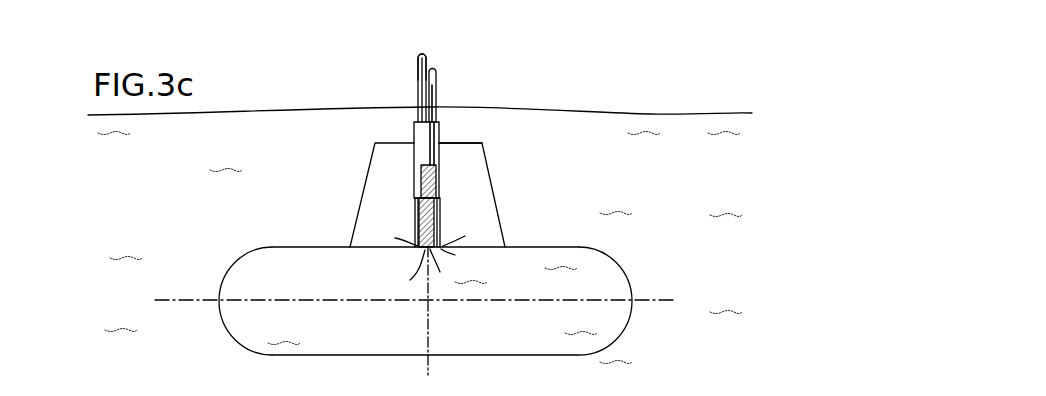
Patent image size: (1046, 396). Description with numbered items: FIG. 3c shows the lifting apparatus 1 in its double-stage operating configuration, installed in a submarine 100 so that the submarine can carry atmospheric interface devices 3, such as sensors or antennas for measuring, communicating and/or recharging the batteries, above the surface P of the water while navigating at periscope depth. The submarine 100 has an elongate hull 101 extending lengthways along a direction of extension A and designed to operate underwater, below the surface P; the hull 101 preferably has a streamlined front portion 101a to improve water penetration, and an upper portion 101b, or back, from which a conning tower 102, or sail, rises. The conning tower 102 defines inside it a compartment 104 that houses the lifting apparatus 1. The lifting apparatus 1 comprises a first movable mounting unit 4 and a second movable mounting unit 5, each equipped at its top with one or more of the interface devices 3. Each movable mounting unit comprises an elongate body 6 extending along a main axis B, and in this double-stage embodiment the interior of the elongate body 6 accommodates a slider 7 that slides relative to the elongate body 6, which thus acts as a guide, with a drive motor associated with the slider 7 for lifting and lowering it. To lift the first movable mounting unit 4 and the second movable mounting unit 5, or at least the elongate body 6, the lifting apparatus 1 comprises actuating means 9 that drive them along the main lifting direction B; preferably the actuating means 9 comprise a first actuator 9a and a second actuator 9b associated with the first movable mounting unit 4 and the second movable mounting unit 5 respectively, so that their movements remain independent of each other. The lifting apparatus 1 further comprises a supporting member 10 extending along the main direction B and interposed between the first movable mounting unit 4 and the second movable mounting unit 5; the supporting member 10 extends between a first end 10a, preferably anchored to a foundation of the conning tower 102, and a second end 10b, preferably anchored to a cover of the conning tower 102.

The lifting apparatus 1 is at (436, 200).
The atmospheric interface devices 3 is at (426, 66).
The first movable mounting unit 4 is at (414, 127).
The second movable mounting unit 5 is at (440, 127).
The elongate body 6 is at (415, 158).
The slider 7 is at (418, 76).
The actuating means 9 is at (441, 249).
The first actuator 9a is at (418, 246).
The second actuator 9b is at (443, 246).
The supporting member 10 is at (425, 250).
The first end 10a is at (430, 249).
The second end 10b is at (440, 174).
The submarine 100 is at (443, 283).
The hull 101 is at (400, 283).
The streamlined front portion 101a is at (228, 310).
The upper portion 101b is at (300, 258).
The conning tower 102 is at (488, 146).
The compartment 104 is at (378, 157).
The surface of the water P is at (713, 114).
The direction of extension A is at (662, 300).
The main axis B is at (428, 375).